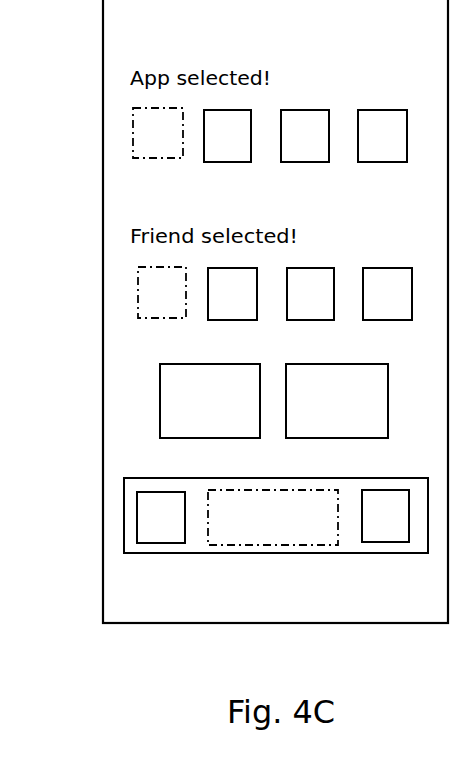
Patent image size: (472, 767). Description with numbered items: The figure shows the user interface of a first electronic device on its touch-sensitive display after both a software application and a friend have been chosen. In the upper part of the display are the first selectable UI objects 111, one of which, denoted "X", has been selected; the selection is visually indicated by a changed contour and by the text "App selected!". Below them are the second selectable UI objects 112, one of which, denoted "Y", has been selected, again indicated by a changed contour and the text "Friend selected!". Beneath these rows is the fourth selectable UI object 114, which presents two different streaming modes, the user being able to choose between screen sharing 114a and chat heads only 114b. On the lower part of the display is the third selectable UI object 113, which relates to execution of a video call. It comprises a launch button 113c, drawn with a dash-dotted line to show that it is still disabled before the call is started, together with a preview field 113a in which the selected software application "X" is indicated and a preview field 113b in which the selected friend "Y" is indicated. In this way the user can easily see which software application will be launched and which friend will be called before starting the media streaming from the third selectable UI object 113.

The first selectable UI object 111 is at (117, 105).
The second selectable UI object 112 is at (120, 272).
The third selectable UI object 113 is at (219, 546).
The preview field 113a is at (155, 543).
The preview field 113b is at (384, 542).
The launch button 113c is at (266, 545).
The fourth selectable UI object 114 is at (213, 401).
The screen sharing 114a is at (210, 401).
The chat heads only 114b is at (337, 401).